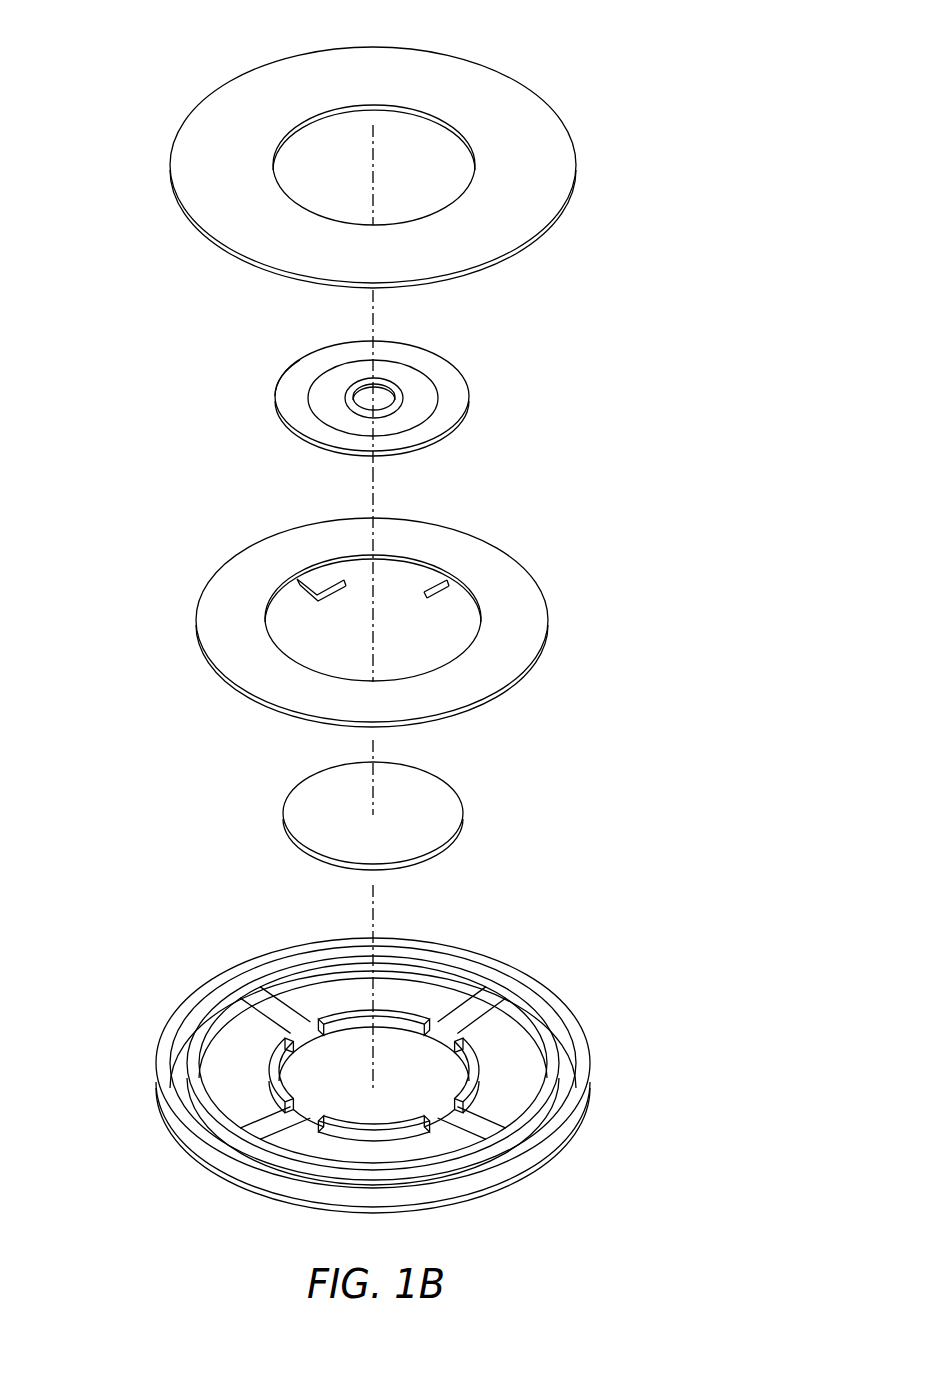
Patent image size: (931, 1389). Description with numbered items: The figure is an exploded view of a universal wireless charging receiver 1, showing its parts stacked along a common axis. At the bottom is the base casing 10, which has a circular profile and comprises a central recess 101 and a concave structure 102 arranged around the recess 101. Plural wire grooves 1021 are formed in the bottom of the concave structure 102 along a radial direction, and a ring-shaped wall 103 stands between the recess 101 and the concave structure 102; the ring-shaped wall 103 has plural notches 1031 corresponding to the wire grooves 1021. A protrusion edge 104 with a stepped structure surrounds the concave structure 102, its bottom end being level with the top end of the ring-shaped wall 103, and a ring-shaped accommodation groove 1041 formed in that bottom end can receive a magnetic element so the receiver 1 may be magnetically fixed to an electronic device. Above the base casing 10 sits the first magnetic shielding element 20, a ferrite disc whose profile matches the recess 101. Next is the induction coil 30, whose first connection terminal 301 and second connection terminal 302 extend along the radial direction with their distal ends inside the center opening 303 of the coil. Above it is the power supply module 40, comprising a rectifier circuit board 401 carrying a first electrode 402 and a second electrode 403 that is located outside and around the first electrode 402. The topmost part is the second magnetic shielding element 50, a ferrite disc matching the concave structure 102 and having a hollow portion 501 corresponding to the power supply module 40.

The universal wireless charging receiver 1 is at (51, 32).
The base casing 10 is at (568, 1125).
The recess 101 is at (350, 1057).
The concave structure 102 is at (428, 997).
The wire grooves 1021 is at (255, 1013).
The ring-shaped wall 103 is at (470, 1067).
The notches 1031 is at (445, 1117).
The protrusion edge 104 is at (533, 1012).
The ring-shaped accommodation groove 1041 is at (180, 1045).
The first magnetic shielding element 20 is at (450, 812).
The induction coil 30 is at (533, 612).
The first connection terminal 301 is at (431, 590).
The second connection terminal 302 is at (320, 590).
The center opening 303 is at (328, 652).
The power supply module 40 is at (460, 398).
The rectifier circuit board 401 is at (290, 405).
The first electrode 402 is at (382, 398).
The second electrode 403 is at (330, 395).
The second magnetic shielding element 50 is at (568, 163).
The hollow portion 501 is at (422, 173).